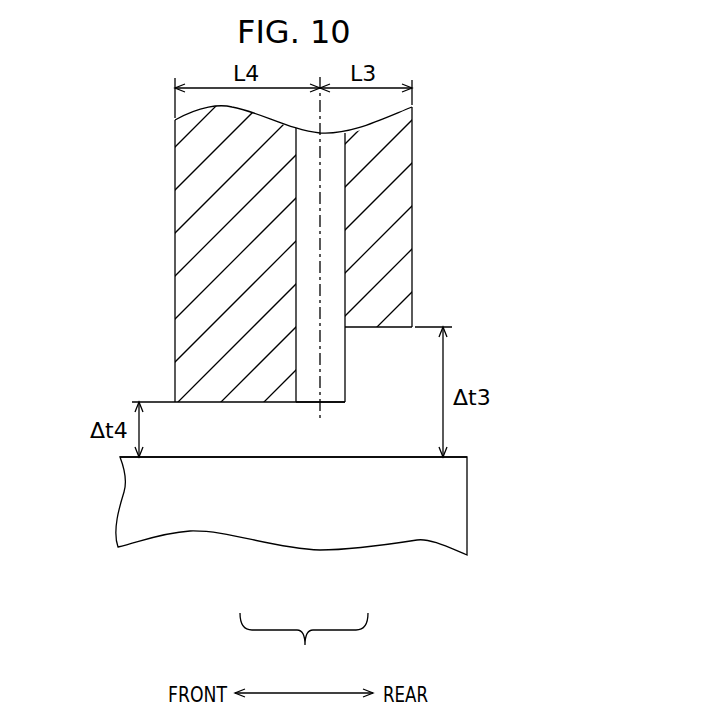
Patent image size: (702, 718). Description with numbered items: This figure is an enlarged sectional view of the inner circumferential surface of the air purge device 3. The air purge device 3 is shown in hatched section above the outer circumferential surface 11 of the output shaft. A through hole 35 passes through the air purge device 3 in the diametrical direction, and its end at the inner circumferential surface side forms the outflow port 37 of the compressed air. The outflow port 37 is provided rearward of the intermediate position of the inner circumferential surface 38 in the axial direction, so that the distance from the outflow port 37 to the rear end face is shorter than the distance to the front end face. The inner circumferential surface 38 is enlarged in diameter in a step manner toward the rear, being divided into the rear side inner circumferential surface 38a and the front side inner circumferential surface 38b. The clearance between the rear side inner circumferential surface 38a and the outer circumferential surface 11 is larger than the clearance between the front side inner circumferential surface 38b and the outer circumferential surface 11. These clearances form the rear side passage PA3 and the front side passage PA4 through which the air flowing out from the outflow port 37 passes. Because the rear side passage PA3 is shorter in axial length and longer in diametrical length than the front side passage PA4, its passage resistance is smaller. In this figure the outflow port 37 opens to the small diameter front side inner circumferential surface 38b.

The air purge device 3 is at (312, 340).
The through hole 35 is at (307, 148).
The outflow port 37 is at (305, 388).
The inner circumferential surface 38 is at (304, 646).
The rear side inner circumferential surface 38a is at (392, 327).
The front side inner circumferential surface 38b is at (280, 402).
The outer circumferential surface 11 is at (457, 457).
The rear side passage PA3 is at (388, 425).
The front side passage PA4 is at (228, 432).